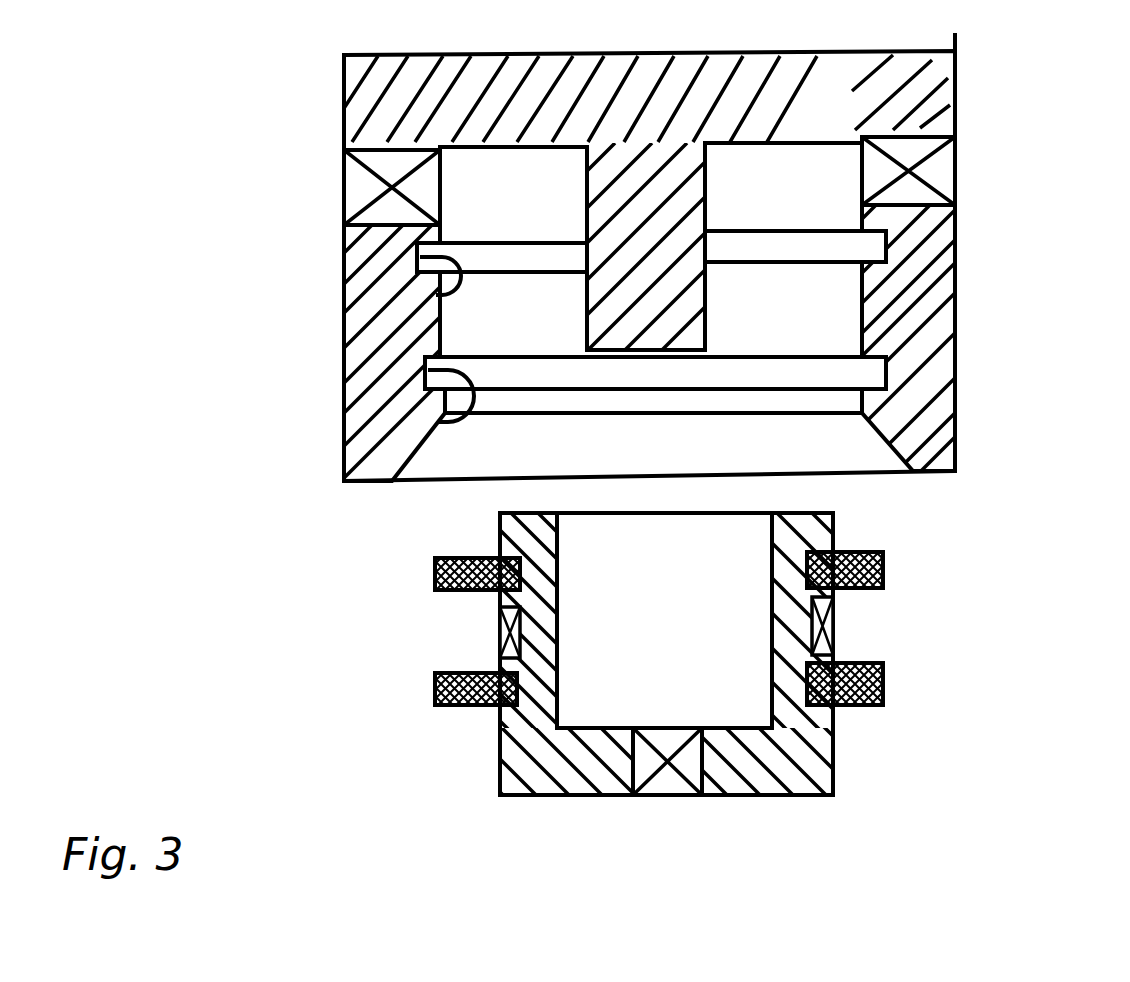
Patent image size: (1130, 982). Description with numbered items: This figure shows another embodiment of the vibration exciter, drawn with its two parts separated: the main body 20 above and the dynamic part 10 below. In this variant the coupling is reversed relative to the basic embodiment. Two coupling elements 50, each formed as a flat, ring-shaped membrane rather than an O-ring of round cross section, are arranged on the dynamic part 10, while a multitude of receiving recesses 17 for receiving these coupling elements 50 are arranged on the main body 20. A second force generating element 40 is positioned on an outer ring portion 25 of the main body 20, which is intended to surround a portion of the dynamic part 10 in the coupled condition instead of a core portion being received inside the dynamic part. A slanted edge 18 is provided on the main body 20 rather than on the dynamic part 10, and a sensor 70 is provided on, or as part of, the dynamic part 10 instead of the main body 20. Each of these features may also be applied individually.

The main body 20 is at (1023, 72).
The second force generating element 40 is at (345, 187).
The receiving recess 17 is at (440, 298).
The outer ring portion 25 is at (925, 308).
The slanted edge 18 is at (425, 455).
The dynamic part 10 is at (963, 570).
The coupling element 50 is at (437, 585).
The sensor 70 is at (656, 775).